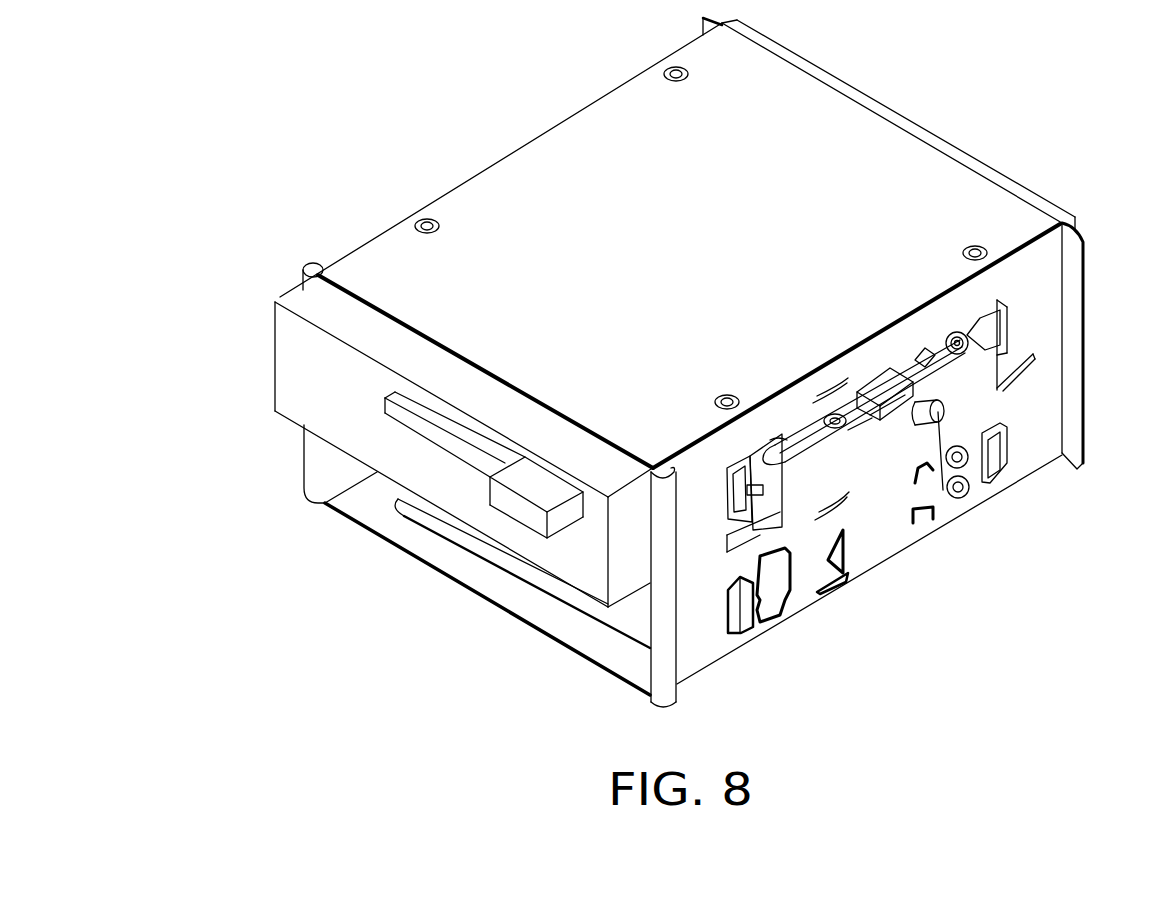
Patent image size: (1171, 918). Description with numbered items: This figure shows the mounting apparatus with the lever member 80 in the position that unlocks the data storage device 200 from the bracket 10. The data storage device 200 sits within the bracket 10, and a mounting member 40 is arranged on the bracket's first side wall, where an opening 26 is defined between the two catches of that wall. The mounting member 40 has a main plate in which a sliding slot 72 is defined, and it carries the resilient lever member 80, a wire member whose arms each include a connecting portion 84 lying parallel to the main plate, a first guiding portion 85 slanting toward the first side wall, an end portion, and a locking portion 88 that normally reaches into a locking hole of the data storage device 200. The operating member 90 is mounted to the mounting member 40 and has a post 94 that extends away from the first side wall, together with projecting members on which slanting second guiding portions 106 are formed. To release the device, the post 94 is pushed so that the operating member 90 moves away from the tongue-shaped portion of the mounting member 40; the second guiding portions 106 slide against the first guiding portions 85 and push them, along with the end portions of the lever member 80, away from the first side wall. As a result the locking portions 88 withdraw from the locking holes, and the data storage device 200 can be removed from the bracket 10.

The bracket 10 is at (522, 126).
The data storage device 200 is at (256, 363).
The operating member 90 is at (881, 390).
The locking portion 88 is at (968, 343).
The second guiding portion 106 is at (956, 368).
The first guiding portion 85 is at (956, 390).
The post 94 is at (945, 414).
The connecting portion 84 is at (941, 420).
The sliding slot 72 is at (878, 425).
The lever member 80 is at (860, 430).
The opening 26 is at (782, 450).
The mounting member 40 is at (778, 452).